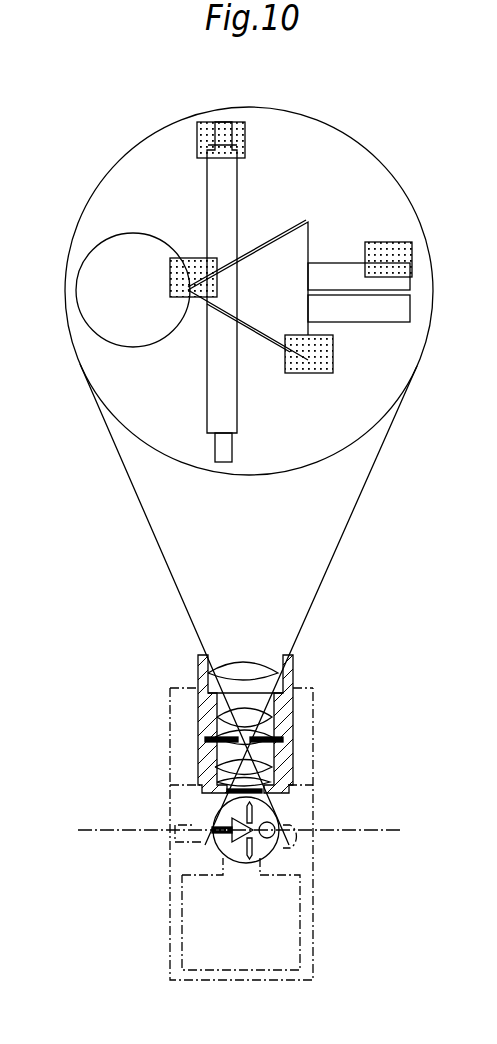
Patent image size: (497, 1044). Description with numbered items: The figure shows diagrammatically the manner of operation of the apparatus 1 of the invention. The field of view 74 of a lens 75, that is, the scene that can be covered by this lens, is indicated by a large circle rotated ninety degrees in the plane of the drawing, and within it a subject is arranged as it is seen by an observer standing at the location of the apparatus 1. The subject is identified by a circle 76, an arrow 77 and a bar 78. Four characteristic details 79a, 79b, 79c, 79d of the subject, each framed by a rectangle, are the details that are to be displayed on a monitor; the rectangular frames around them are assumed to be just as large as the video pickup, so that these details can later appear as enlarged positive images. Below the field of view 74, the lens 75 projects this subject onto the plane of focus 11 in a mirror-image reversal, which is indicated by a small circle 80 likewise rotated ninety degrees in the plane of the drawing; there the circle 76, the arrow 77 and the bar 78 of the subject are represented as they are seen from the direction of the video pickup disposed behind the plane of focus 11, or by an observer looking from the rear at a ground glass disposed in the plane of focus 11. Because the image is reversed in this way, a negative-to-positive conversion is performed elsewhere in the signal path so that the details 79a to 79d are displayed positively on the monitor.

The apparatus 1 is at (330, 775).
The plane of focus 11 is at (368, 830).
The field of view 74 is at (137, 145).
The lens 75 is at (295, 673).
The circle 76 is at (102, 342).
The arrow 77 is at (333, 263).
The bar 78 is at (230, 197).
The characteristic detail 79a is at (195, 262).
The characteristic detail 79b is at (237, 140).
The characteristic detail 79c is at (398, 253).
The characteristic detail 79d is at (327, 357).
The circle 80 is at (217, 853).